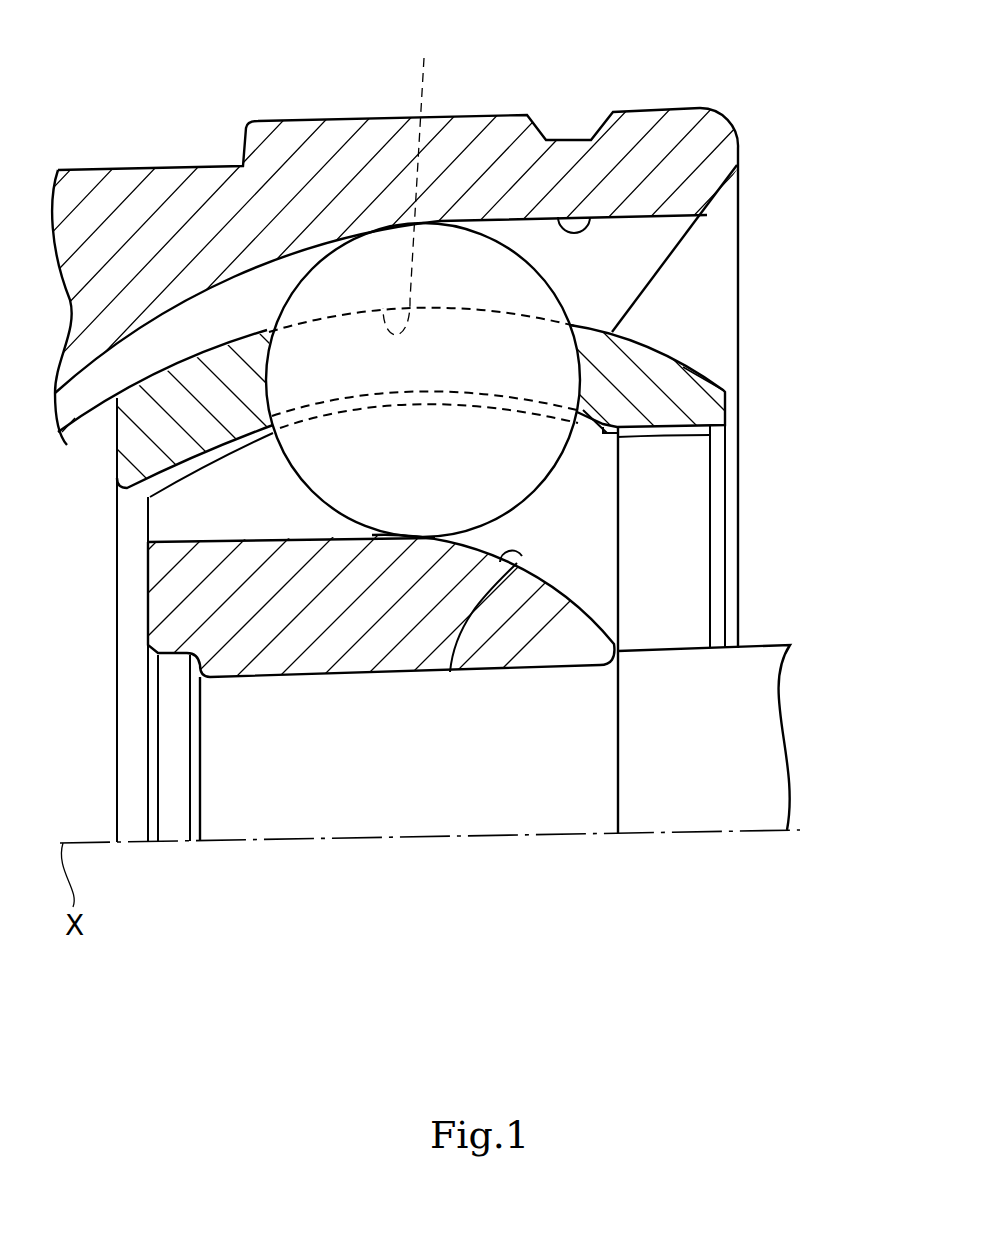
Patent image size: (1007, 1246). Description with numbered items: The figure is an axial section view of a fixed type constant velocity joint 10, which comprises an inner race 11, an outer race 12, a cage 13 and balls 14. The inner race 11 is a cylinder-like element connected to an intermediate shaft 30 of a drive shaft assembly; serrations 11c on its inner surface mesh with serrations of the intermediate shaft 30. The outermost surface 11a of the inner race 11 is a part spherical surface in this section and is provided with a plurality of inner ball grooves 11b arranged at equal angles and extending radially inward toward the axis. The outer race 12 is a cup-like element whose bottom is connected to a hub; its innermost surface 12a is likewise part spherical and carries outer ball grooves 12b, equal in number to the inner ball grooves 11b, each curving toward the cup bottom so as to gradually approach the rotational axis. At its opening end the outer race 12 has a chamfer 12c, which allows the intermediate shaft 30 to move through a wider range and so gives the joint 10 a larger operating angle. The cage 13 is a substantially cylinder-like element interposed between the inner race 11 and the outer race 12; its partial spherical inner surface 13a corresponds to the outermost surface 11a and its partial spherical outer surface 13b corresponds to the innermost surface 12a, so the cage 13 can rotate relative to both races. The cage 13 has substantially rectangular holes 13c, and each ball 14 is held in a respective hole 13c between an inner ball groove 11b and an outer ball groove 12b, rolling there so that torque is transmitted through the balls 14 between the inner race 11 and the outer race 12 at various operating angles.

The constant velocity joint 10 is at (770, 72).
The inner race 11 is at (235, 665).
The outermost surface of the inner race 11a is at (215, 450).
The inner ball grooves 11b is at (450, 672).
The serrations 11c is at (273, 677).
The outer race 12 is at (295, 120).
The innermost surface of the outer race 12a is at (421, 181).
The outer ball grooves 12b is at (586, 225).
The chamfer 12c is at (717, 205).
The cage 13 is at (690, 392).
The partial spherical inner surface of the cage 13a is at (712, 433).
The partial spherical outer surface of the cage 13b is at (645, 340).
The rectangular holes 13c is at (573, 322).
The balls 14 is at (503, 283).
The intermediate shaft 30 is at (760, 668).